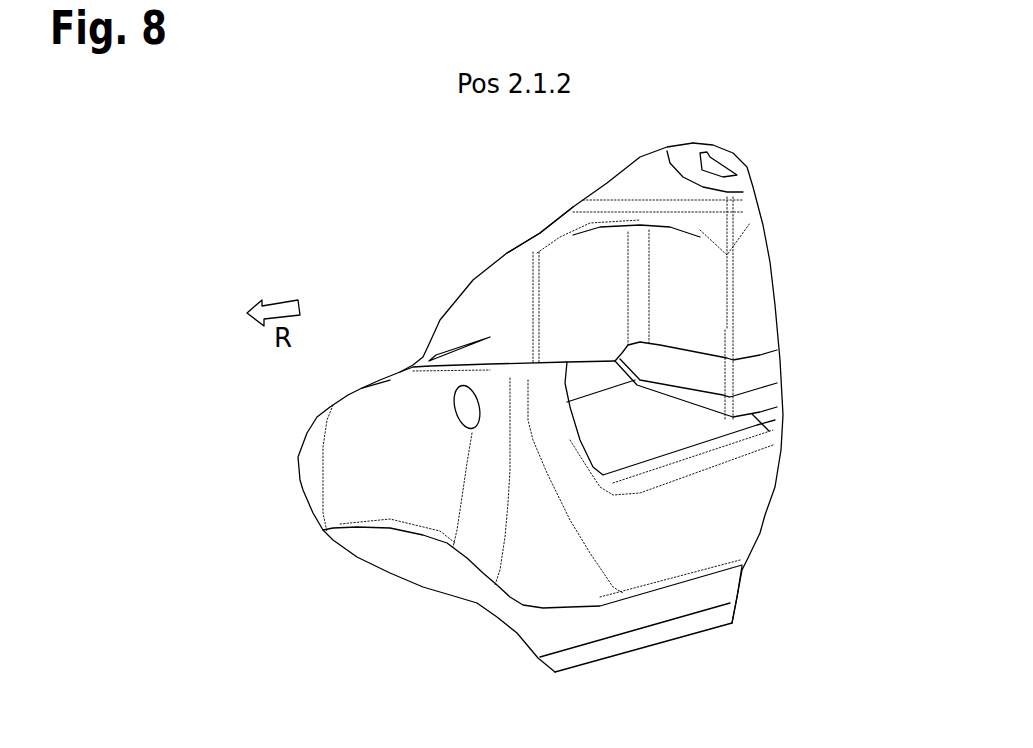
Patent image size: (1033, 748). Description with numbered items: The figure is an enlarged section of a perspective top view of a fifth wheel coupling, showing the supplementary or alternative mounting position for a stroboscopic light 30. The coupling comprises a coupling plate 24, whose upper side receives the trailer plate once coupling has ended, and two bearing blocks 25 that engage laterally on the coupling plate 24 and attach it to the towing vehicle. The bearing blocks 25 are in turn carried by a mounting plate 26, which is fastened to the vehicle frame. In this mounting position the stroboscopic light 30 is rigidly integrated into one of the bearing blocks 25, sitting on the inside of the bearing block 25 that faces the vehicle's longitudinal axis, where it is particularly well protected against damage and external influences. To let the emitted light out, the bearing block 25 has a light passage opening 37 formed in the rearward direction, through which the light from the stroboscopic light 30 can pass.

The coupling plate 24 is at (516, 201).
The stroboscopic light 30 is at (521, 320).
The light passage opening 37 is at (313, 387).
The bearing block 25 is at (448, 526).
The mounting plate 26 is at (688, 619).